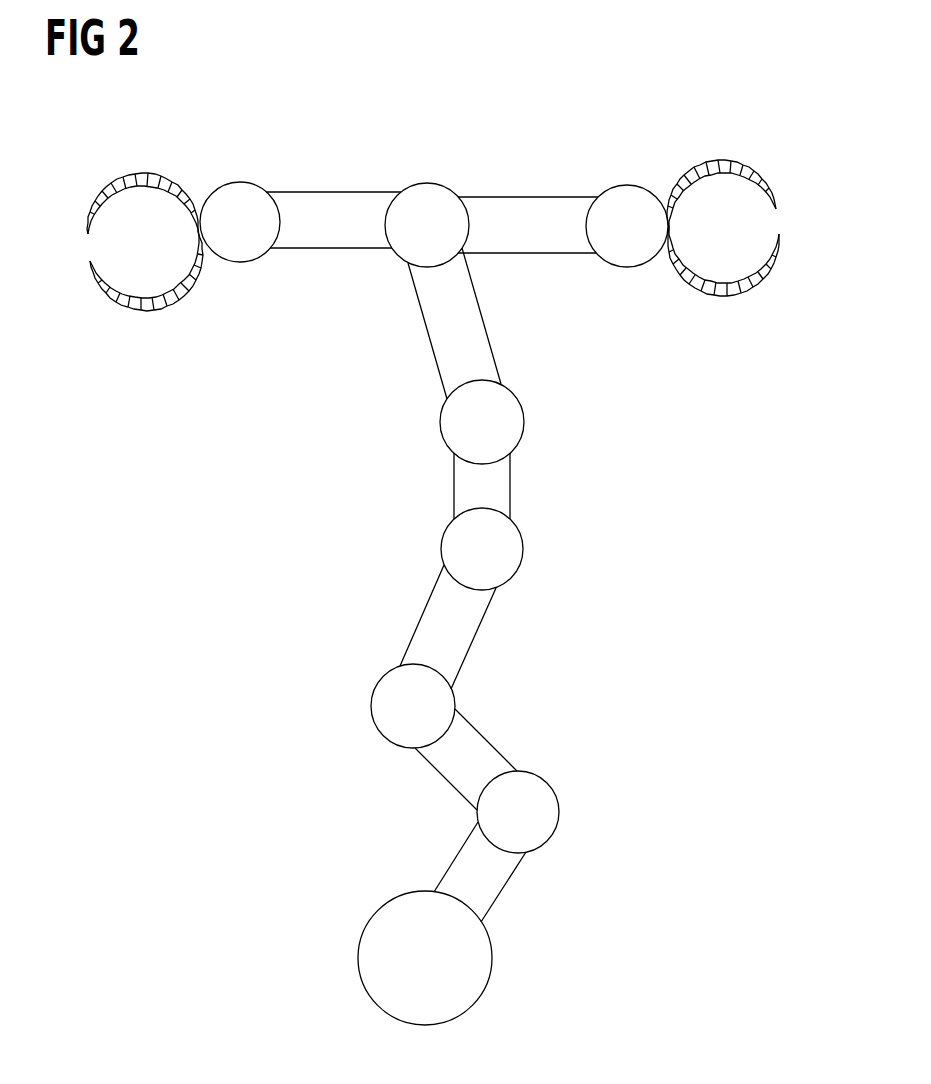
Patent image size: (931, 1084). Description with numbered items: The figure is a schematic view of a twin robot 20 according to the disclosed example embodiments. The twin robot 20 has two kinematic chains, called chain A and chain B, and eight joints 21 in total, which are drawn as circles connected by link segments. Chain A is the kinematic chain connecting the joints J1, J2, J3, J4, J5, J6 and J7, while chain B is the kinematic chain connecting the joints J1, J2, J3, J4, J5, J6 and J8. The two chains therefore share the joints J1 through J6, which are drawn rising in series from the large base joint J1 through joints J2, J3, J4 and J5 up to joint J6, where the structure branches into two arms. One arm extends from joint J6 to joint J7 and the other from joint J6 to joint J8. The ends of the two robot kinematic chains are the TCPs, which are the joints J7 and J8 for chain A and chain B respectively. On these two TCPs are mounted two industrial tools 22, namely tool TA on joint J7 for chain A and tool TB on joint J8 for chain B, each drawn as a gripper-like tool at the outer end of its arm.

The twin robot 20 is at (632, 546).
The joints 21 is at (434, 603).
The industrial tools 22 is at (436, 201).
The joint J1 is at (425, 958).
The joint J2 is at (518, 812).
The joint J3 is at (413, 706).
The joint J4 is at (482, 549).
The joint J5 is at (482, 422).
The joint J6 is at (427, 225).
The joint J7 is at (240, 222).
The joint J8 is at (627, 226).
The tool TA is at (122, 242).
The tool TB is at (748, 228).